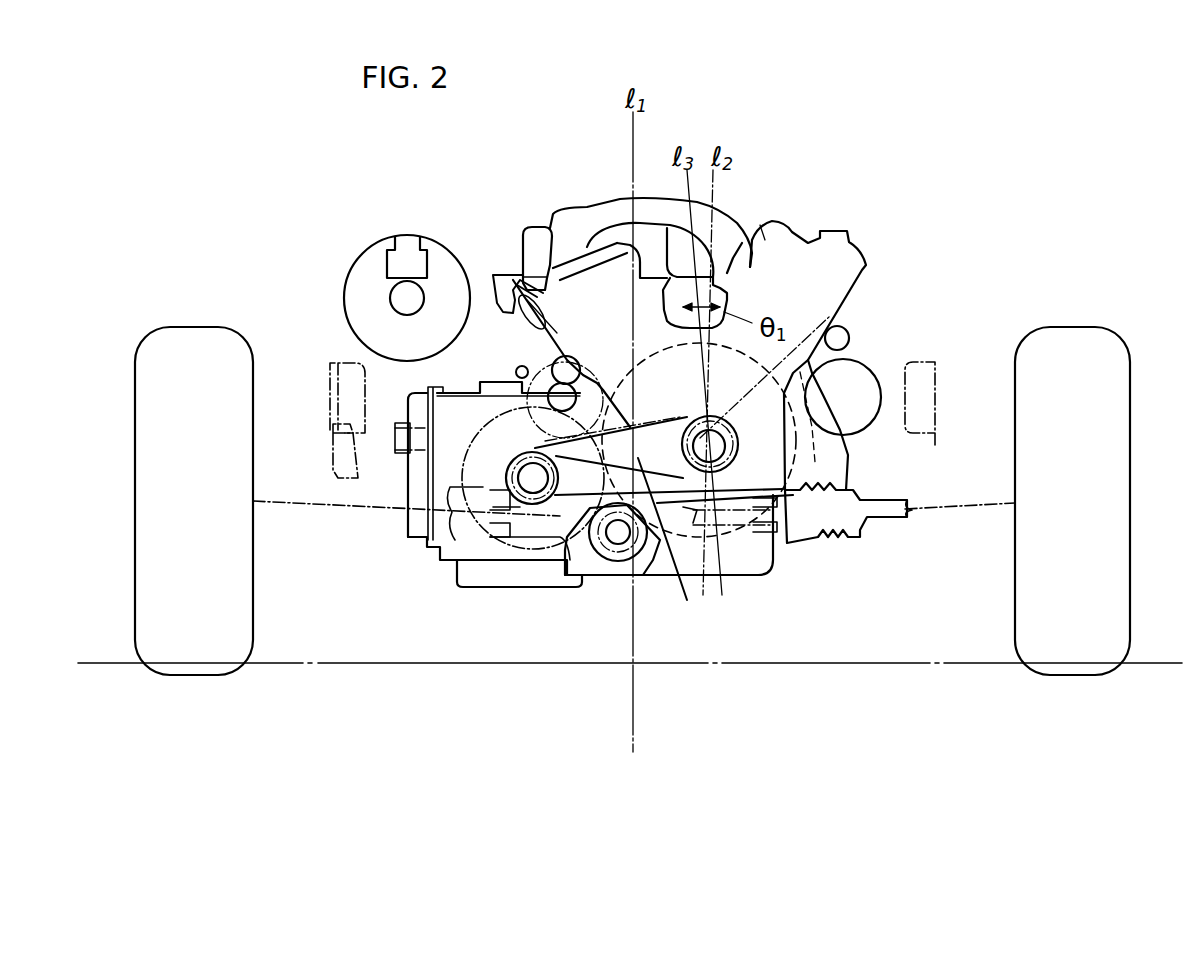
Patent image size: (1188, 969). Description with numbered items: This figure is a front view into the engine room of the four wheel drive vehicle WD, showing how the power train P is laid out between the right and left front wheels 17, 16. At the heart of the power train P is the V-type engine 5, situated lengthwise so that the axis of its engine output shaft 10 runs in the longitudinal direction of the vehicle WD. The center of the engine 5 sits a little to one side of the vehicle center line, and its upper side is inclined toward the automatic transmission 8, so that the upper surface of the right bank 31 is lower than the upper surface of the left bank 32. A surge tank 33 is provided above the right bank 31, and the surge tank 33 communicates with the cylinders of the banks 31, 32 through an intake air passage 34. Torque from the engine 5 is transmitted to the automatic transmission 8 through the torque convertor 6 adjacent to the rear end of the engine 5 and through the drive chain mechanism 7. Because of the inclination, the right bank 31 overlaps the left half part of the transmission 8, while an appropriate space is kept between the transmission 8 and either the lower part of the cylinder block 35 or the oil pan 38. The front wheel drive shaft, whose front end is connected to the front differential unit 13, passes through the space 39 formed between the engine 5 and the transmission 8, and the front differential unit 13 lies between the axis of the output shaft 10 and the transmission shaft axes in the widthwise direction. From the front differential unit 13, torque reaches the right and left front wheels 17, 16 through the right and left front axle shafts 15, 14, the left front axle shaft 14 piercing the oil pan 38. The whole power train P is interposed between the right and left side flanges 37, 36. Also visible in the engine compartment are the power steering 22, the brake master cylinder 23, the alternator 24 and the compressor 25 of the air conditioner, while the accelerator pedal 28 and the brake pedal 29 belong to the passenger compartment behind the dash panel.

The engine 5 is at (805, 222).
The torque convertor 6 is at (747, 547).
The drive chain mechanism 7 is at (667, 423).
The automatic transmission 8 is at (403, 524).
The engine output shaft 10 is at (714, 418).
The front differential unit 13 is at (620, 577).
The left front axle shaft 14 is at (933, 507).
The right front axle shaft 15 is at (281, 507).
The left front wheel 16 is at (1073, 677).
The right front wheel 17 is at (220, 677).
The power steering 22 is at (505, 432).
The brake master cylinder 23 is at (362, 252).
The alternator 24 is at (513, 366).
The compressor 25 is at (850, 433).
The accelerator pedal 28 is at (328, 455).
The brake pedal 29 is at (393, 450).
The right bank 31 is at (495, 278).
The left bank 32 is at (778, 230).
The surge tank 33 is at (535, 226).
The intake air passage 34 is at (652, 200).
The cylinder block 35 is at (785, 492).
The left side flange 36 is at (330, 377).
The right side flange 37 is at (937, 393).
The oil pan 38 is at (737, 578).
The space 39 is at (615, 444).
The power train P is at (855, 199).
The four wheel drive vehicle WD is at (1003, 183).